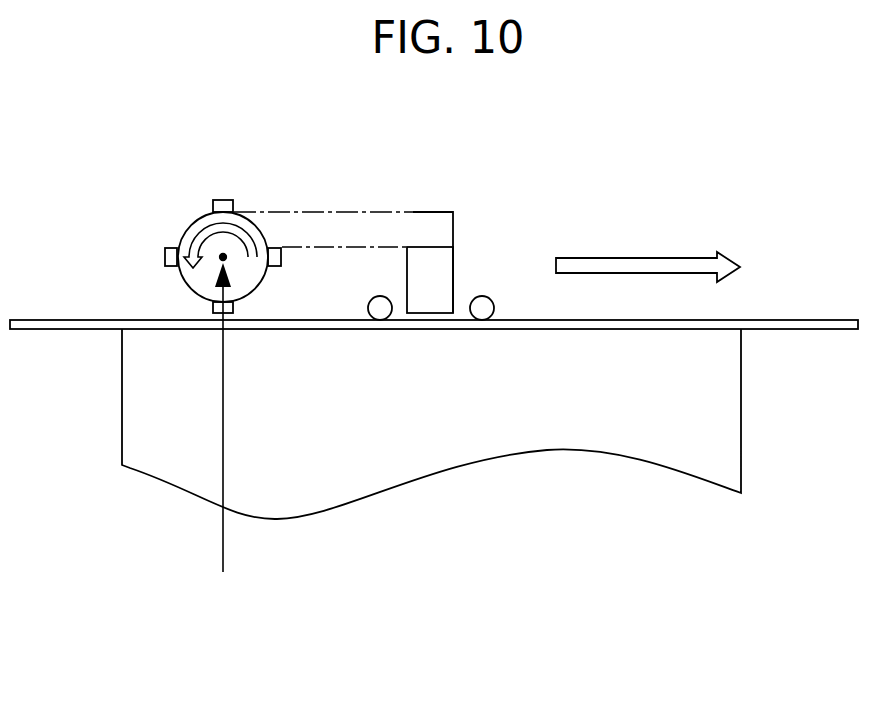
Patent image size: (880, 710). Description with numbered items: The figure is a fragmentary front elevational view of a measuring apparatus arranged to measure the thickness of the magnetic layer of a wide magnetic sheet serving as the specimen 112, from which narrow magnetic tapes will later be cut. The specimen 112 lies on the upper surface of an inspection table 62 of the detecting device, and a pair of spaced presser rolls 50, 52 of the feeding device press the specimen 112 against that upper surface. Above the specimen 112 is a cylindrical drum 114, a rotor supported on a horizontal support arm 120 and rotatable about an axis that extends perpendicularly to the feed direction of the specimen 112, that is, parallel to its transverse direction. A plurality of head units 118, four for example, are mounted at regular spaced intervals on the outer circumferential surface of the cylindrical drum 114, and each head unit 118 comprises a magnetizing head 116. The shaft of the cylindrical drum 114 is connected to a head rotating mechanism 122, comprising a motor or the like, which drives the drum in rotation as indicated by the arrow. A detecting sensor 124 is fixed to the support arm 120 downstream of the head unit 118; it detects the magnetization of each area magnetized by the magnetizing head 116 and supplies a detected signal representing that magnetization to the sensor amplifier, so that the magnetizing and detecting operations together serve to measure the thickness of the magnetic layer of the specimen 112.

The presser roll 50 is at (381, 312).
The presser roll 52 is at (483, 312).
The inspection table 62 is at (572, 448).
The specimen 112 is at (788, 333).
The cylindrical drum 114 is at (257, 235).
The magnetizing head 116 is at (222, 200).
The head unit 118 is at (185, 223).
The support arm 120 is at (373, 235).
The head rotating mechanism 122 is at (226, 471).
The detecting sensor 124 is at (437, 281).